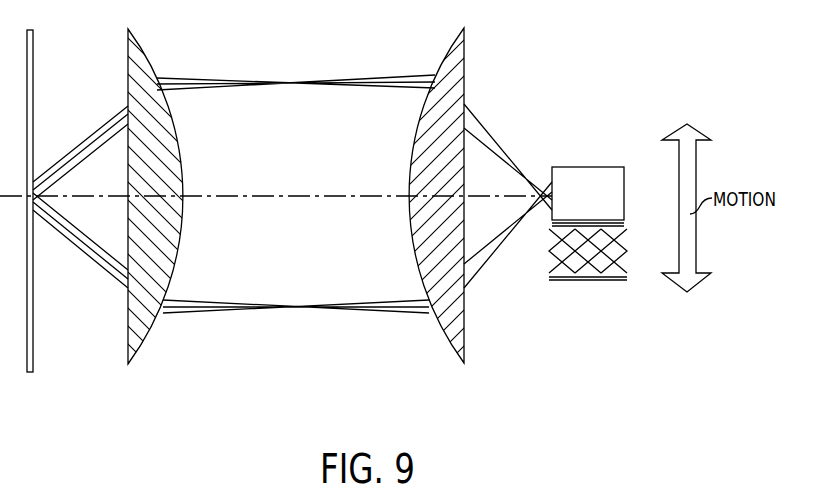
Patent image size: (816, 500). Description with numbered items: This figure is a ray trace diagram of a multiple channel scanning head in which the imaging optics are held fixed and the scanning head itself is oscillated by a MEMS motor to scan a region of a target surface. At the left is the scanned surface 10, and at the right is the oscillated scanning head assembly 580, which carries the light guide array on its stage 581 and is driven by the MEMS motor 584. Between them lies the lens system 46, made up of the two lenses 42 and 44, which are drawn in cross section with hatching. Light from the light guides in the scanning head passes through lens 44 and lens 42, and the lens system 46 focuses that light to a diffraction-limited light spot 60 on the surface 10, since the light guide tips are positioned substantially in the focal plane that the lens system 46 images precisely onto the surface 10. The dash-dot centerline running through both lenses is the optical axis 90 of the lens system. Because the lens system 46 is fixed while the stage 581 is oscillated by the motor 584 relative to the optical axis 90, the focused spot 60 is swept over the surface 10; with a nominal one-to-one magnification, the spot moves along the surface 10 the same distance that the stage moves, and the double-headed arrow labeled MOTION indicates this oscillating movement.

The scanned surface 10 is at (33, 68).
The light spot 60 is at (35, 213).
The lens 42 is at (164, 189).
The lens 44 is at (443, 192).
The lens system 46 is at (297, 275).
The optical axis 90 is at (217, 196).
The detector assembly 580 is at (588, 191).
The detector 581 is at (602, 205).
The actuator 584 is at (602, 260).